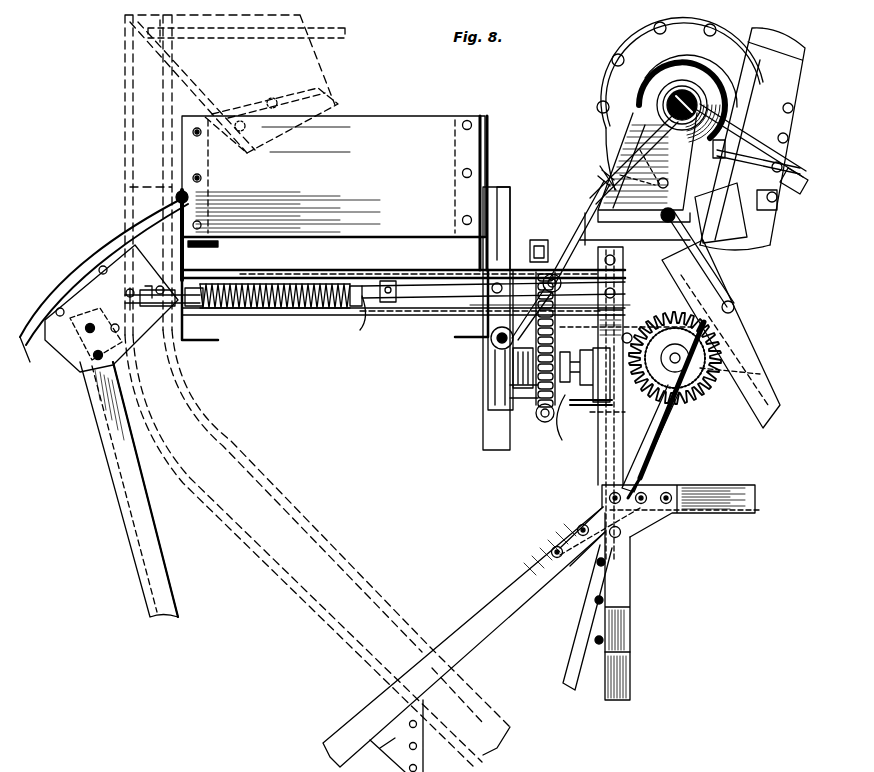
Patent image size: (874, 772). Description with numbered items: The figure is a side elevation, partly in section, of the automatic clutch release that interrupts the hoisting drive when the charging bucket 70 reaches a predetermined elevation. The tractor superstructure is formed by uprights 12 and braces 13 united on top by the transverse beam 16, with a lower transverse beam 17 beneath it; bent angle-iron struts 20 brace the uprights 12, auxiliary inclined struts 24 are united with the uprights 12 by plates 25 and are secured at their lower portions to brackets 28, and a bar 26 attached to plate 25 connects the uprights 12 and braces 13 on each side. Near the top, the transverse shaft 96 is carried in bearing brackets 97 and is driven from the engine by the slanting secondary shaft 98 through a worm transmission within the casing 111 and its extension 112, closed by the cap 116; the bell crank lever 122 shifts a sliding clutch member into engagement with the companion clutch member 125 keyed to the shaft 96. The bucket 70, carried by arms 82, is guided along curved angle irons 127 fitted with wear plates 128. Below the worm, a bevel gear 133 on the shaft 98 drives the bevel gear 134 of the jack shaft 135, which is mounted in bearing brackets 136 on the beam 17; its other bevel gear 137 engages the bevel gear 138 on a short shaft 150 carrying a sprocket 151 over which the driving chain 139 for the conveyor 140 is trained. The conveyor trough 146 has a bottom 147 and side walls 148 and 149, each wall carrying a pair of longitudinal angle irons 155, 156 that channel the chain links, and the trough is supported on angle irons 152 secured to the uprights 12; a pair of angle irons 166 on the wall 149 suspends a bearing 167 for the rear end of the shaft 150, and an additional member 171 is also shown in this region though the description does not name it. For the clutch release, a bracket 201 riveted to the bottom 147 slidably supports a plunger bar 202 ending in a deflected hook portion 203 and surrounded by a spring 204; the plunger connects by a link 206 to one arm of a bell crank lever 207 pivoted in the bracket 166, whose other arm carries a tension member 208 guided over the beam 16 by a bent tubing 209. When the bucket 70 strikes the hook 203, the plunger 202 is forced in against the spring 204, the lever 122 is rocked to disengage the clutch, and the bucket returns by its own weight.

The upright 12 is at (630, 582).
The brace 13 is at (720, 322).
The transverse beam 16 is at (628, 238).
The transverse beam 17 is at (578, 388).
The strut 20 is at (630, 655).
The inclined strut 24 is at (512, 604).
The plate 25 is at (585, 560).
The bar 26 is at (756, 512).
The bracket 28 is at (425, 758).
The bucket 70 is at (322, 60).
The arm 82 is at (355, 612).
The transverse shaft 96 is at (345, 33).
The bearing bracket 97 is at (607, 172).
The secondary shaft 98 is at (648, 462).
The worm gear casing 111 is at (610, 72).
The extension 112 is at (772, 204).
The closure cap 116 is at (745, 55).
The bell crank lever 122 is at (770, 160).
The clutch member 125 is at (650, 70).
The curved angle iron 127 is at (35, 362).
The wear plate 128 is at (38, 312).
The bevel gear 133 is at (722, 334).
The bevel gear 134 is at (720, 362).
The jack shaft 135 is at (760, 375).
The bearing bracket 136 is at (632, 332).
The bevel gear 137 is at (705, 398).
The bevel gear 138 is at (652, 432).
The driving chain 139 is at (543, 424).
The conveyor 140 is at (397, 107).
The conveyor trough 146 is at (408, 268).
The bottom 147 is at (358, 268).
The side wall 148 is at (162, 279).
The side wall 149 is at (490, 155).
The short shaft 150 is at (598, 406).
The sprocket 151 is at (527, 388).
The angle iron 152 is at (520, 262).
The angle iron 155 is at (202, 235).
The angle iron 156 is at (462, 230).
The angle iron 166 is at (485, 352).
The bearing 167 is at (513, 378).
The angle bracket 171 is at (214, 342).
The bracket 201 is at (195, 308).
The plunger bar 202 is at (351, 322).
The hook portion 203 is at (160, 310).
The spring 204 is at (275, 306).
The link 206 is at (430, 300).
The bell crank lever 207 is at (490, 300).
The tension member 208 is at (572, 225).
The bent tubing 209 is at (612, 142).